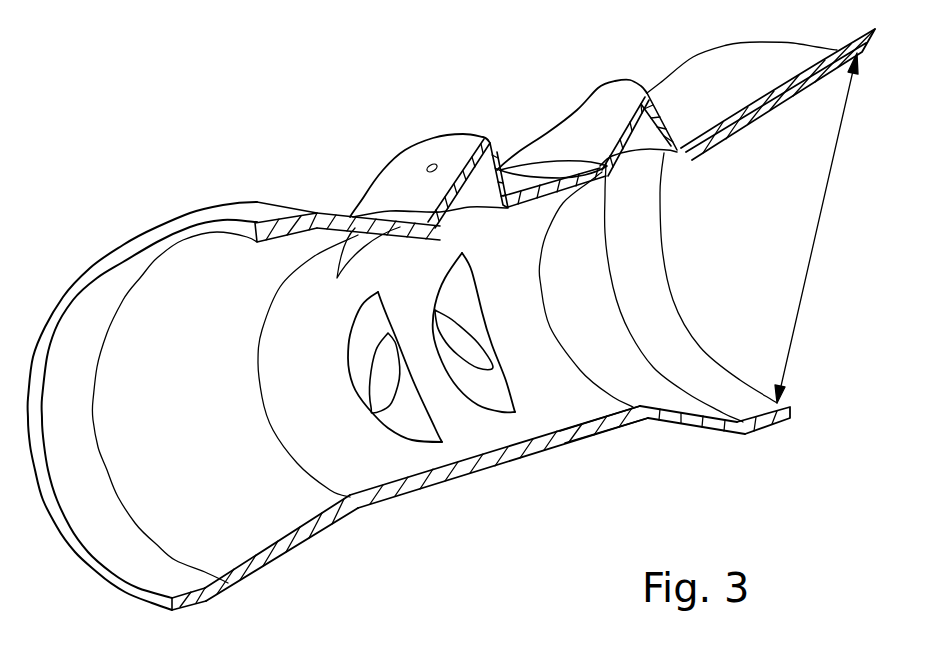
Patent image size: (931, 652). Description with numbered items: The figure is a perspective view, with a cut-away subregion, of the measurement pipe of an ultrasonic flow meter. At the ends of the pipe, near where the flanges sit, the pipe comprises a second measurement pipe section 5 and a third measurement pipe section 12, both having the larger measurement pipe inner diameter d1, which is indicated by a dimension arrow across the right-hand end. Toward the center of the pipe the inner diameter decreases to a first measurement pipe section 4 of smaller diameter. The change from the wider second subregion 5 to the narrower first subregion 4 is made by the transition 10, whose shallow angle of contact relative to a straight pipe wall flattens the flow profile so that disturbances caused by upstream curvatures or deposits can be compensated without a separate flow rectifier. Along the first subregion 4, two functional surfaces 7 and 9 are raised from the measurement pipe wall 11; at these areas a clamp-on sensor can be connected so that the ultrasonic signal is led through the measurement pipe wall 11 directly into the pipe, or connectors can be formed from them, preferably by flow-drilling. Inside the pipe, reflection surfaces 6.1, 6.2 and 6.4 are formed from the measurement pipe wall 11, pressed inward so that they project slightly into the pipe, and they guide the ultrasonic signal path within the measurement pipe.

The first measurement pipe section 4 is at (595, 428).
The second measurement pipe section 5 is at (762, 420).
The functional surface 7 is at (647, 93).
The functional surface 9 is at (450, 148).
The transition 10 is at (640, 413).
The measurement pipe wall 11 is at (548, 440).
The third measurement pipe section 12 is at (200, 600).
The reflection surface 6.1 is at (472, 347).
The reflection surface 6.2 is at (560, 170).
The reflection surface 6.4 is at (382, 395).
The measurement pipe inner diameter d1 is at (816, 228).